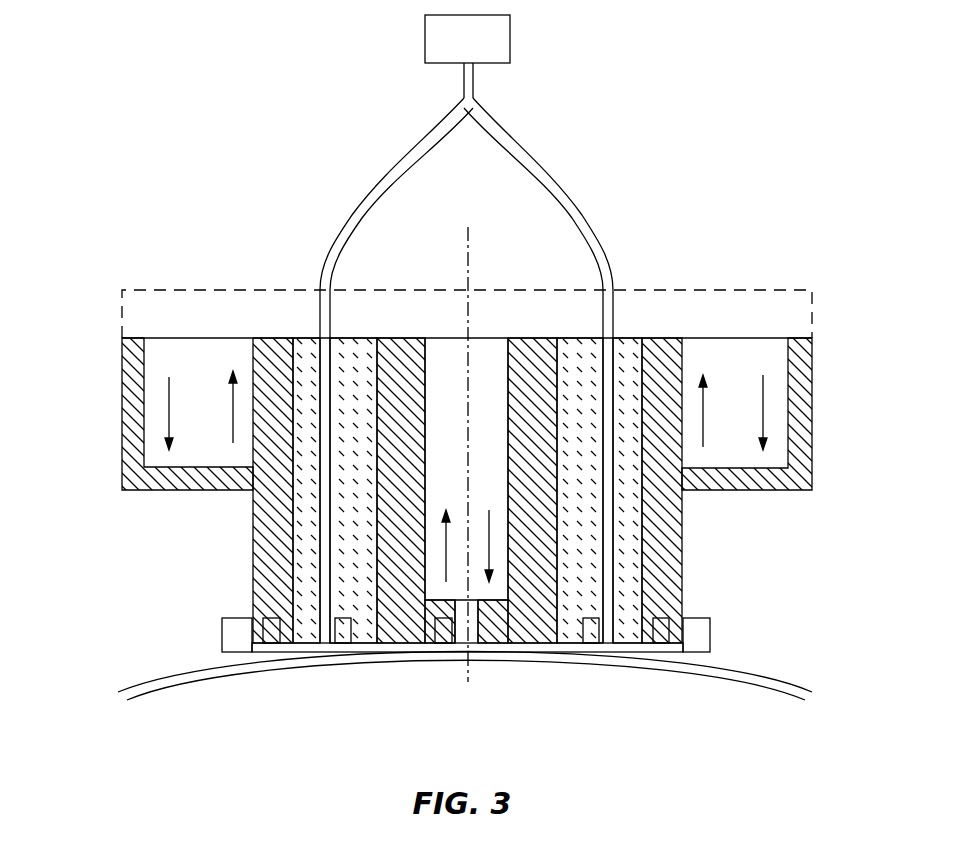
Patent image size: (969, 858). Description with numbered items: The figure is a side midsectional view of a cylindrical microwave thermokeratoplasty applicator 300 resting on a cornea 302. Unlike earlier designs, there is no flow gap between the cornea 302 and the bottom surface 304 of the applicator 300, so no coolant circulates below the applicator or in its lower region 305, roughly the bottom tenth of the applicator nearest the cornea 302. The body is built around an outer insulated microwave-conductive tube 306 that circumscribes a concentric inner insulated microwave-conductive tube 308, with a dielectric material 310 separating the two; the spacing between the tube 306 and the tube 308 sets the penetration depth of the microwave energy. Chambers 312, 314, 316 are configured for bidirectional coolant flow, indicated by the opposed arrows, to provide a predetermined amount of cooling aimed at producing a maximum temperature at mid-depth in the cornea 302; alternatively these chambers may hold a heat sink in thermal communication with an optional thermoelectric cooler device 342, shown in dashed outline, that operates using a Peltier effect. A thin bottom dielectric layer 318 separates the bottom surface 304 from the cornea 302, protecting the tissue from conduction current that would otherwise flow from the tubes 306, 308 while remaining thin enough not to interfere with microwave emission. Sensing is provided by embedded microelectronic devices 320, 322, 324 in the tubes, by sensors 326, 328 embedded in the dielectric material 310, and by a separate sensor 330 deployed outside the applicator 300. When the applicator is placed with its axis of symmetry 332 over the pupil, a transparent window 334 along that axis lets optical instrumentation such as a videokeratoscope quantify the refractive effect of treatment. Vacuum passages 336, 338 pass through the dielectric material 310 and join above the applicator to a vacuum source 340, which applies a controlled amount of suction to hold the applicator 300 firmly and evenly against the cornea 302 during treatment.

The cylindrical applicator 300 is at (66, 268).
The cornea 302 is at (782, 676).
The bottom surface 304 is at (306, 648).
The lower region 305 is at (86, 567).
The outer insulated microwave-conductive tube 306 is at (268, 337).
The inner insulated tube 308 is at (528, 338).
The dielectric material 310 is at (360, 337).
The chamber 312 is at (164, 357).
The chamber 314 is at (488, 355).
The chamber 316 is at (728, 358).
The bottom dielectric layer 318 is at (636, 645).
The embedded microelectronic device 320 is at (272, 627).
The embedded microelectronic device 322 is at (661, 633).
The embedded microelectronic device 324 is at (445, 643).
The sensor 326 is at (342, 642).
The sensor 328 is at (592, 643).
The sensor 330 is at (704, 636).
The axis of symmetry 332 is at (466, 244).
The transparent window 334 is at (473, 627).
The vacuum passage 336 is at (316, 353).
The vacuum passage 338 is at (609, 352).
The vacuum source 340 is at (512, 27).
The thermoelectric cooler device 342 is at (797, 312).